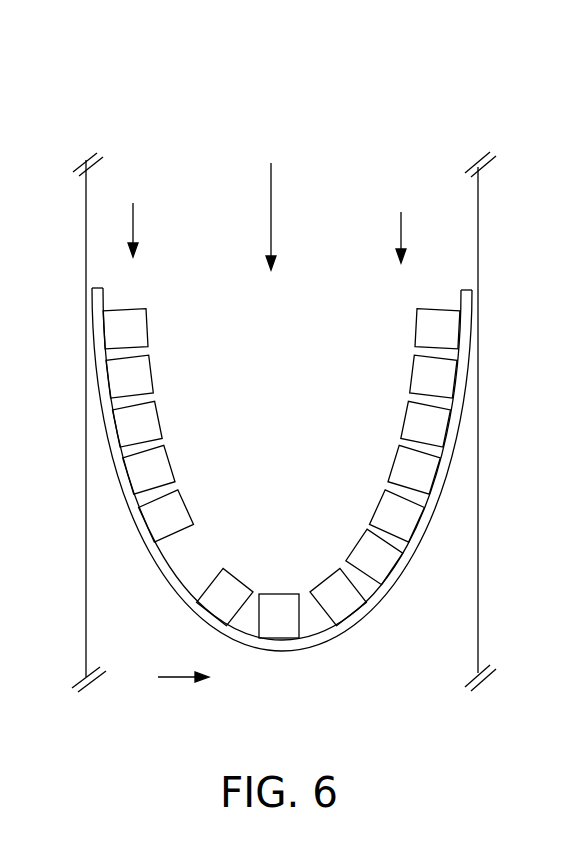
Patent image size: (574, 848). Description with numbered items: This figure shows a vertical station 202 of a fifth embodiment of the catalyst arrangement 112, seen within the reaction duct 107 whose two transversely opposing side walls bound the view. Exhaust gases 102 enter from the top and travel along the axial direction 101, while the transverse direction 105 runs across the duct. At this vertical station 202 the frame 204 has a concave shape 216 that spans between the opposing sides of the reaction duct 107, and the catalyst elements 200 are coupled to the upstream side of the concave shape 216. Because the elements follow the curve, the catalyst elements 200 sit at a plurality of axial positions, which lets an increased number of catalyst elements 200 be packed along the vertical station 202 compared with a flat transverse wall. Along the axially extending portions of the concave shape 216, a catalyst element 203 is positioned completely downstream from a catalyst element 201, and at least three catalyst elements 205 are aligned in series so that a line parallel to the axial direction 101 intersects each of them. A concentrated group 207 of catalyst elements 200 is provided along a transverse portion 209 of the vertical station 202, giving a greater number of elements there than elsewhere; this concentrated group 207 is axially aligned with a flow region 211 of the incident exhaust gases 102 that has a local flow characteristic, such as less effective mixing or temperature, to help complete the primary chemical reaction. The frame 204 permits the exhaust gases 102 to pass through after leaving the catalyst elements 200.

The catalyst arrangement 112 is at (409, 95).
The vertical station 202 is at (416, 140).
The exhaust gases 102 is at (133, 213).
The flow region 211 is at (296, 208).
The axial direction 101 is at (271, 197).
The reaction duct 107 is at (85, 555).
The concentrated group 207 is at (154, 417).
The catalyst elements aligned in series 205 is at (413, 330).
The catalyst element 201 is at (184, 504).
The catalyst element 203 is at (233, 581).
The catalyst elements 200 is at (340, 572).
The transverse portion 209 is at (138, 597).
The frame 204 is at (377, 603).
The concave shape 216 is at (333, 637).
The transverse direction 105 is at (170, 680).